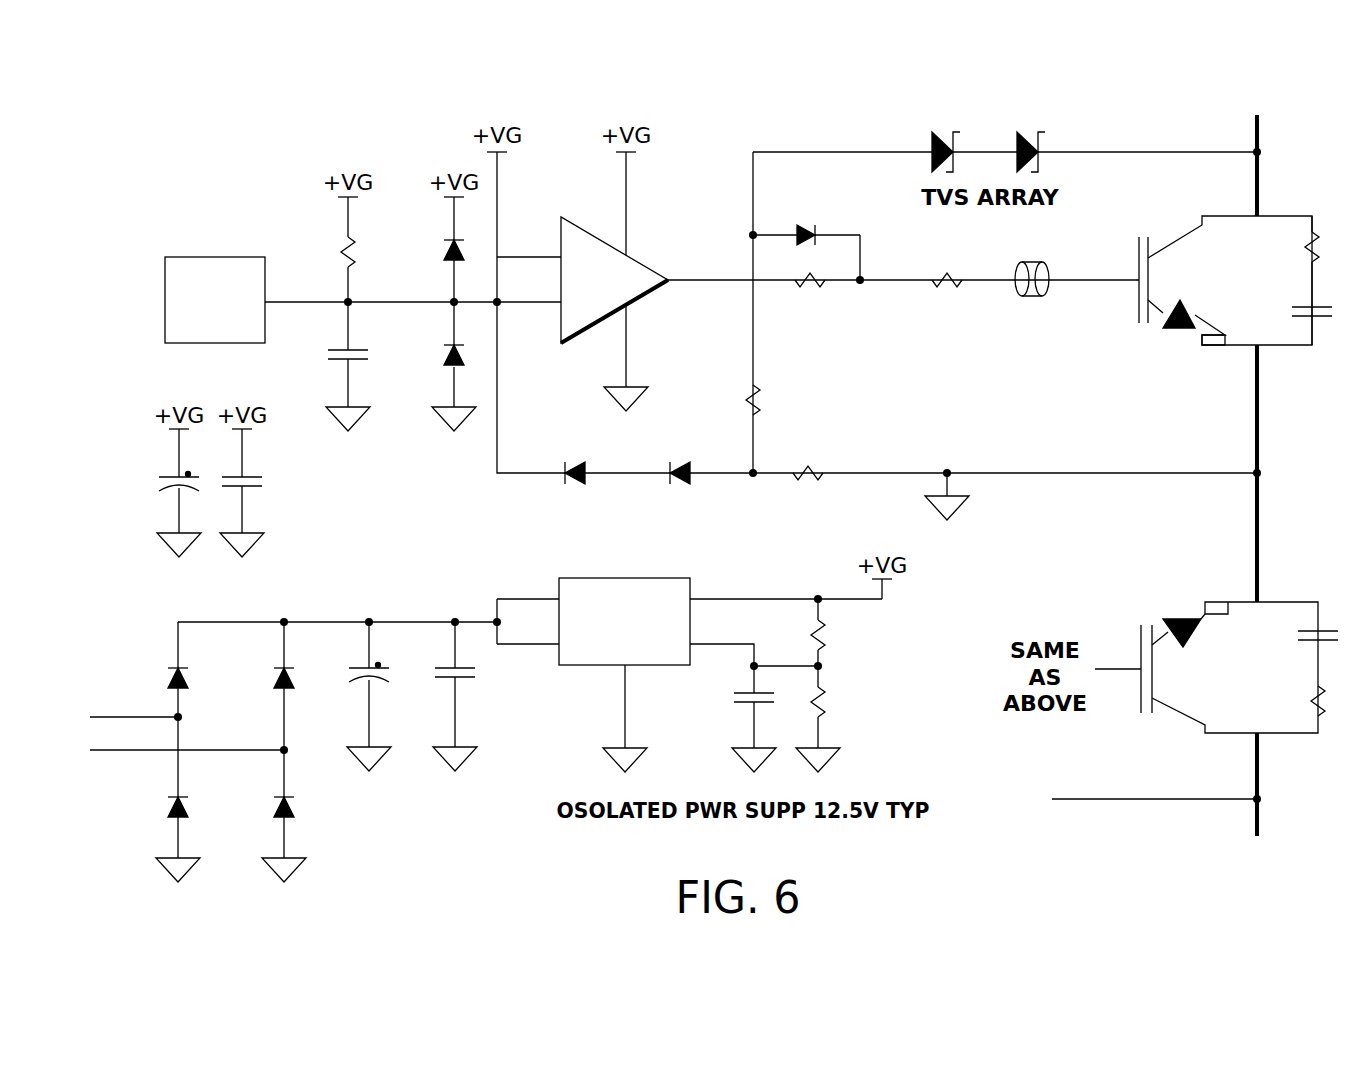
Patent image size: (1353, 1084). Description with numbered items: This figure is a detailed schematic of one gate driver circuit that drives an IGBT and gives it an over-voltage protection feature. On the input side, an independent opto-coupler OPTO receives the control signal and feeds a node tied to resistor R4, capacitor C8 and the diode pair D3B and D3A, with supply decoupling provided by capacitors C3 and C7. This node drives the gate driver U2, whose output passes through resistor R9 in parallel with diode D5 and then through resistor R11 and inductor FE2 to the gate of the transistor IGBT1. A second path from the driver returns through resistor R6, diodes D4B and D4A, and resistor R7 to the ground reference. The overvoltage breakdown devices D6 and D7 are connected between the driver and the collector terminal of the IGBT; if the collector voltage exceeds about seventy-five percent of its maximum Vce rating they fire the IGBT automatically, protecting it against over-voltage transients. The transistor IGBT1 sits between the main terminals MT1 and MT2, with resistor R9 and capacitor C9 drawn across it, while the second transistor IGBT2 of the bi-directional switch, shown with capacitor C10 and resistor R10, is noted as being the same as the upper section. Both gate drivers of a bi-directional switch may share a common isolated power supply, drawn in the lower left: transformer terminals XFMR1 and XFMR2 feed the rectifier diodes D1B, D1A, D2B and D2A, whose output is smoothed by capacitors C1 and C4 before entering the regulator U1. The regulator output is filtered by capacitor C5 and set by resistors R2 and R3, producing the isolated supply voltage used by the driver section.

The opto-coupler OPTO is at (215, 300).
The resistor 560 R4 is at (319, 249).
The capacitor NI C8 is at (330, 366).
The diode BAV99 D3B is at (419, 249).
The diode BAV99 D3A is at (425, 366).
The capacitor 33u C3 is at (157, 493).
The capacitor 0.1u C7 is at (267, 493).
The gate driver buffer U2 is at (625, 281).
The diode ES2DA D5 is at (806, 207).
The resistor R9 is at (1055, 284).
The resistor 4R7 R6 is at (784, 404).
The resistor 4R7 R7 is at (800, 508).
The diode NI D4B is at (578, 474).
The diode NI D4A is at (680, 474).
The overvoltage breakdown device D6 is at (945, 135).
The overvoltage breakdown device D7 is at (1030, 135).
The resistor 3R0 R11 is at (968, 280).
The ferrite inductor 390uH FE2 is at (1040, 281).
The IGBT IGBT1 is at (1219, 274).
The capacitor 10n C9 is at (1293, 314).
The main terminal 1 MT1 is at (1255, 95).
The main terminal 2 MT2 is at (1258, 860).
The IGBT IGBT2 is at (1206, 681).
The capacitor 10n C10 is at (1293, 639).
The resistor 40 R10 is at (1286, 708).
The transformer terminal 1 XFMR1 is at (130, 702).
The transformer terminal 2 XFMR2 is at (183, 736).
The diode BAV99 D1B is at (135, 680).
The diode BAV99 D1A is at (141, 816).
The diode BAV99 D2B is at (248, 686).
The diode BAV99 D2A is at (254, 816).
The capacitor 33u C1 is at (350, 696).
The capacitor 0.1u C4 is at (438, 696).
The regulator MIC5235 U1 is at (689, 650).
The capacitor 0.1u C5 is at (732, 724).
The resistor 23k7 R2 is at (851, 632).
The resistor 2k74 R3 is at (844, 719).